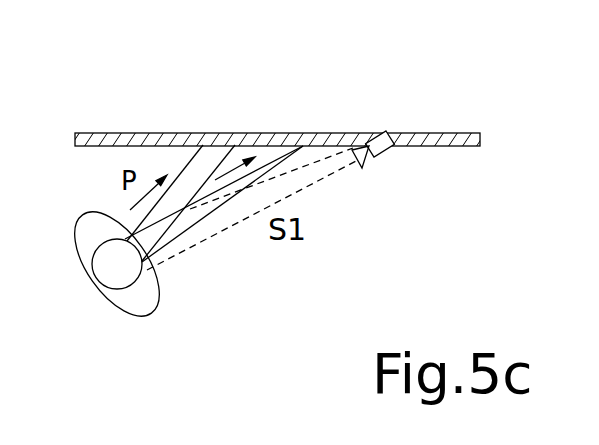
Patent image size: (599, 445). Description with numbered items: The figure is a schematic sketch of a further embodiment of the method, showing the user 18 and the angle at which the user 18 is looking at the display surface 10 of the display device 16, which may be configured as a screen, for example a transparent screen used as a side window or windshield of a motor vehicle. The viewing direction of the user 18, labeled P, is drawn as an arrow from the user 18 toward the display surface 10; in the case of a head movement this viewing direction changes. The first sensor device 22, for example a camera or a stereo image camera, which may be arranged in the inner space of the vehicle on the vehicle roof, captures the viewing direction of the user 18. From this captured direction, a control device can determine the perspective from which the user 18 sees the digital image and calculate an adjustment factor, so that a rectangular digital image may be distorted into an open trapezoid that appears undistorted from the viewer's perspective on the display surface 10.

The display surface 10 is at (278, 102).
The display device 16 is at (283, 133).
The user 18 is at (118, 298).
The first sensor device 22 is at (386, 131).